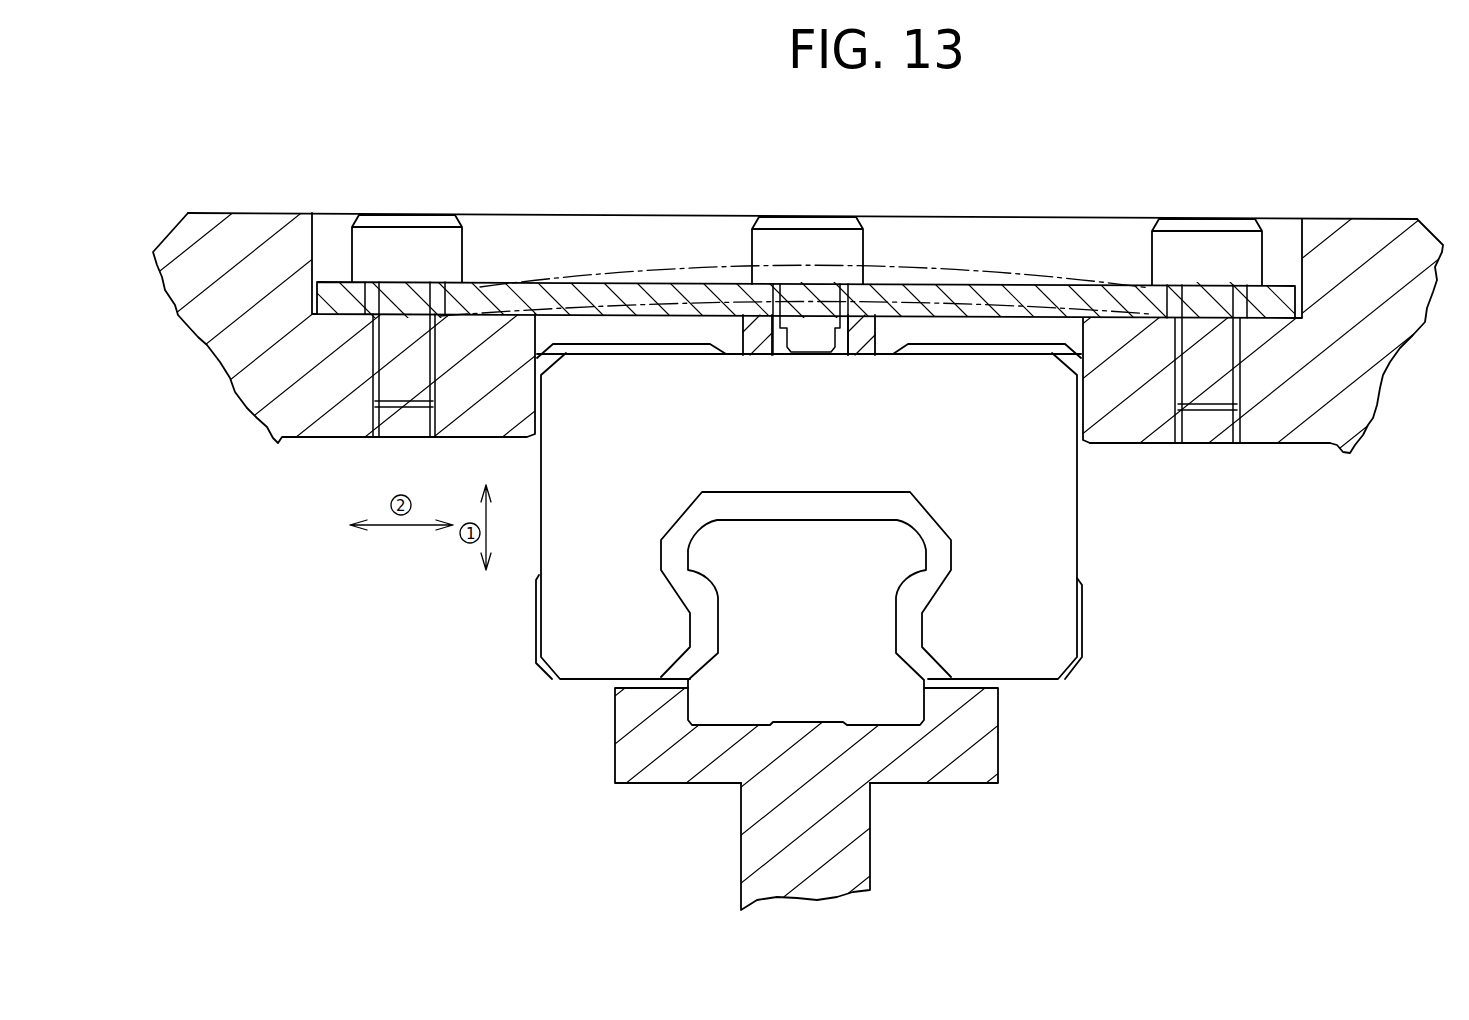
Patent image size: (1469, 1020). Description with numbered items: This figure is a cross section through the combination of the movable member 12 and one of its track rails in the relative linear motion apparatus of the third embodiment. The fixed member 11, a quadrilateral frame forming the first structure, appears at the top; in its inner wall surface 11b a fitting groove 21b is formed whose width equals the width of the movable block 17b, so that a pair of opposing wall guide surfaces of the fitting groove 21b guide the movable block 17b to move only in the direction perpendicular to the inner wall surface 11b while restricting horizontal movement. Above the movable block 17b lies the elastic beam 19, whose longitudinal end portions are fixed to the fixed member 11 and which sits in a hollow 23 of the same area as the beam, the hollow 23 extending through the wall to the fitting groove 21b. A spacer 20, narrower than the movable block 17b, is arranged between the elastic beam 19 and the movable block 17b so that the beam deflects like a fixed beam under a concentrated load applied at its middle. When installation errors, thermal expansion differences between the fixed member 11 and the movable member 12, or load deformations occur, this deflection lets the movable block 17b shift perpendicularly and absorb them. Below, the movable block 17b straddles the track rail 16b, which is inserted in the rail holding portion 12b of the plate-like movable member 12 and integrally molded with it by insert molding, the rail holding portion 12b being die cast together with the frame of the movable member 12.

The fixed member 11 is at (1367, 233).
The inner wall surface 11b is at (1267, 447).
The movable member 12 is at (850, 852).
The rail holding portion 12b is at (983, 767).
The track rail 16b is at (888, 703).
The movable block 17b is at (1050, 548).
The elastic beam 19 is at (920, 297).
The spacer 20 is at (745, 318).
The fitting groove 21b is at (1075, 346).
The hollow 23 is at (1120, 300).